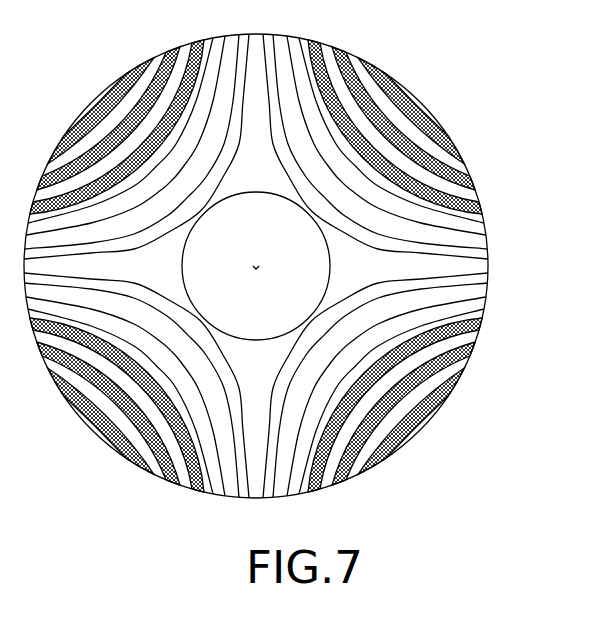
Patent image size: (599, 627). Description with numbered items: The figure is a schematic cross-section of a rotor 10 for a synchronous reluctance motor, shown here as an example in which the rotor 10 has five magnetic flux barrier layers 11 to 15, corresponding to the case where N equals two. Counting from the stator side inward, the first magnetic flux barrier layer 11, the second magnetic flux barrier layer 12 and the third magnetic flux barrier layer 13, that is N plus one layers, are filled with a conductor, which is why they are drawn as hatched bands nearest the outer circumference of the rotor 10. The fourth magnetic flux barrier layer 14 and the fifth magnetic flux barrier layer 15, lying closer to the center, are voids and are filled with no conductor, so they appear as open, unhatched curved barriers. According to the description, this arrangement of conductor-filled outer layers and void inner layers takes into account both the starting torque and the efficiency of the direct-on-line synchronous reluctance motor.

The rotor 10 is at (492, 47).
The first magnetic flux barrier layer 11 is at (432, 137).
The second magnetic flux barrier layer 12 is at (454, 168).
The third magnetic flux barrier layer 13 is at (455, 198).
The fourth magnetic flux barrier layer 14 is at (459, 230).
The fifth magnetic flux barrier layer 15 is at (466, 259).